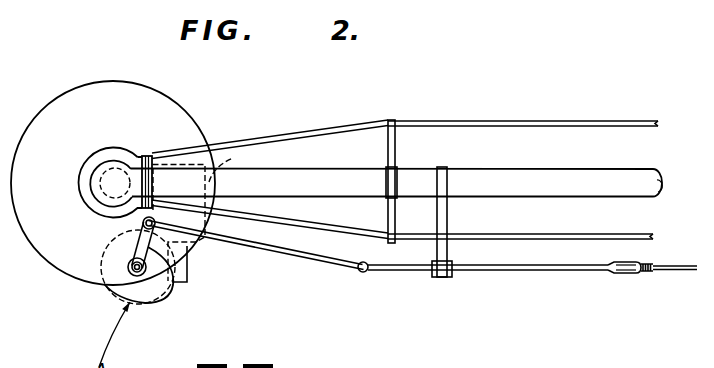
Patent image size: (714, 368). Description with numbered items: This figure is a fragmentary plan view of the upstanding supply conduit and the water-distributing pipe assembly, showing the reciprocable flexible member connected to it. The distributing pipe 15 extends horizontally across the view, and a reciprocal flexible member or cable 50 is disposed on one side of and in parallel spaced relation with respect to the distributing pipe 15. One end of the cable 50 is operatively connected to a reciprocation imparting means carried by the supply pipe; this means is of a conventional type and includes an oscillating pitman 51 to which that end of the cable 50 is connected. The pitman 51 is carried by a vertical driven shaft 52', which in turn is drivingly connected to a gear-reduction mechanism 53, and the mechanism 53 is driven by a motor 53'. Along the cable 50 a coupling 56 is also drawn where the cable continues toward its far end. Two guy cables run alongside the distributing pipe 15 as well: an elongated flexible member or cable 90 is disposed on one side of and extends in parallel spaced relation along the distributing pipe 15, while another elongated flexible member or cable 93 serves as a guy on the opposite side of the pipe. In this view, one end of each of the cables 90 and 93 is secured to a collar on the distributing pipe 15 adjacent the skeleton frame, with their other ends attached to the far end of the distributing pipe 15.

The distributing pipe 15 is at (533, 171).
The elongated flexible member or cable 93 is at (506, 122).
The elongated flexible member or cable 90 is at (518, 237).
The reciprocal flexible member or cable 50 is at (503, 272).
The rod coupling 56 is at (678, 271).
The oscillating pitman 51 is at (147, 242).
The vertical driven shaft 52' is at (105, 284).
The gear-reduction mechanism 53 is at (111, 304).
The motor 53' is at (239, 164).